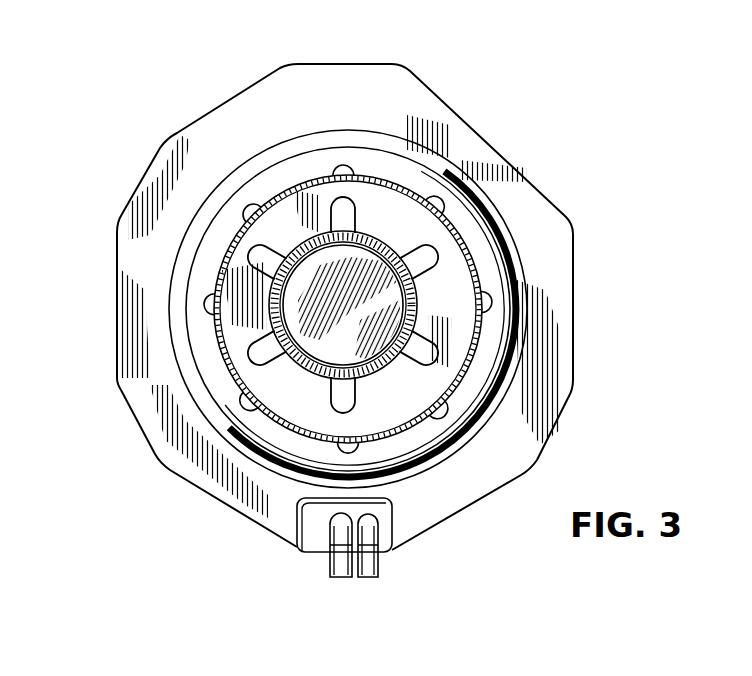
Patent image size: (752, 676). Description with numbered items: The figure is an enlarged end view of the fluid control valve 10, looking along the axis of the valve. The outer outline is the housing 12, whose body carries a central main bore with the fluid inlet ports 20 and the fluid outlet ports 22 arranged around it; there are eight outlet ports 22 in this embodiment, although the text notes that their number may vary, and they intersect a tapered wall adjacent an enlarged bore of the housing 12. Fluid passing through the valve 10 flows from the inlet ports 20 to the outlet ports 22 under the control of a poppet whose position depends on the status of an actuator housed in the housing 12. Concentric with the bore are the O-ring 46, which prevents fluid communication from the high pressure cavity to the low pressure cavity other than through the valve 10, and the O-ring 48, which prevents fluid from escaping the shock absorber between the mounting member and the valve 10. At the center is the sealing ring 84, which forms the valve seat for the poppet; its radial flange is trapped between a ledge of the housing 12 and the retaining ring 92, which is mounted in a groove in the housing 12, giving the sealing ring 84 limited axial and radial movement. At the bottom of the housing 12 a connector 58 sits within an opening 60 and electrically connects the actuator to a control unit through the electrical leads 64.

The fluid control valve 10 is at (126, 108).
The housing 12 is at (220, 483).
The fluid inlet ports 20 is at (413, 250).
The fluid outlet ports 22 is at (350, 167).
The O-ring 46 is at (503, 262).
The O-ring 48 is at (517, 302).
The connector 58 is at (322, 540).
The opening 60 is at (385, 551).
The electrical leads 64 is at (338, 577).
The sealing ring 84 is at (348, 347).
The retaining ring 92 is at (368, 383).